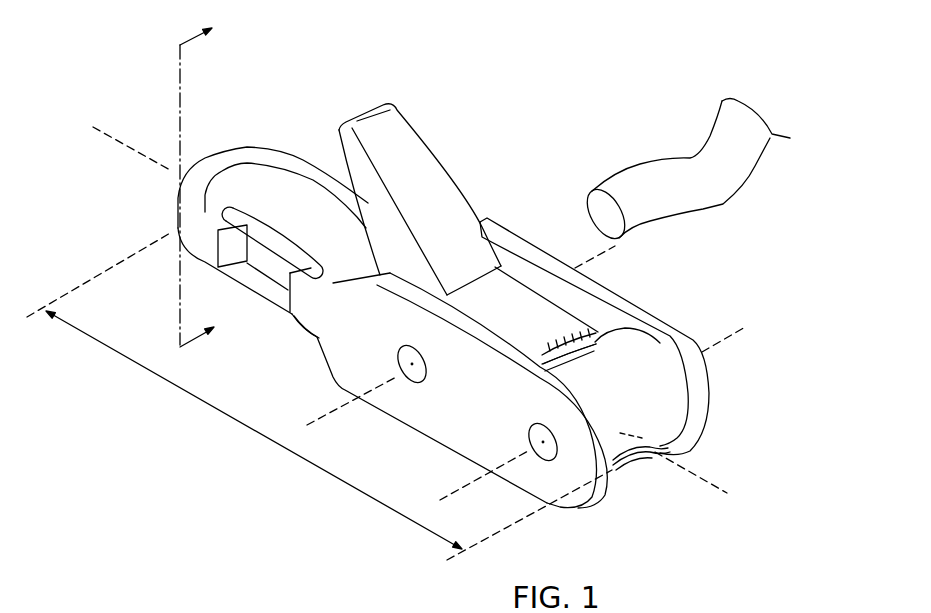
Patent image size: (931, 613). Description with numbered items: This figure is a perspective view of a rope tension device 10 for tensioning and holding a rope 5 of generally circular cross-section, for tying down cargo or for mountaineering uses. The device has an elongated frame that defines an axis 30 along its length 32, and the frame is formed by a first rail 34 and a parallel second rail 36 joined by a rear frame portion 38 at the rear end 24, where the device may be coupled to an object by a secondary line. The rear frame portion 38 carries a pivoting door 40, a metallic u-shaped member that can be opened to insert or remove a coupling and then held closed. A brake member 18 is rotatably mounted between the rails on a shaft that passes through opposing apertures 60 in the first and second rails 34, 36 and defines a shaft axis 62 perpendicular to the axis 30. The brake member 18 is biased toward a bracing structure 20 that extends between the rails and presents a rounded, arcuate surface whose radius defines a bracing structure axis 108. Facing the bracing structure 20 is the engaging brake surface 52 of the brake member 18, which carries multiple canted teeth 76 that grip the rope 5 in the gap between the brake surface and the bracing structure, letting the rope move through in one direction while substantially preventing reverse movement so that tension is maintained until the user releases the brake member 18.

The rope 5 is at (703, 211).
The rope tension device 10 is at (409, 283).
The brake member 18 is at (428, 145).
The bracing structure 20 is at (656, 414).
The rear end 24 is at (218, 162).
The axis 30 is at (718, 488).
The length 32 is at (270, 440).
The first rail 34 is at (340, 352).
The second rail 36 is at (632, 306).
The rear frame portion 38 is at (273, 201).
The pivoting door 40 is at (265, 309).
The engaging brake surface 52 is at (587, 353).
The apertures 60 is at (423, 383).
The shaft axis 62 is at (607, 254).
The teeth 76 is at (573, 372).
The bracing structure axis 108 is at (467, 487).